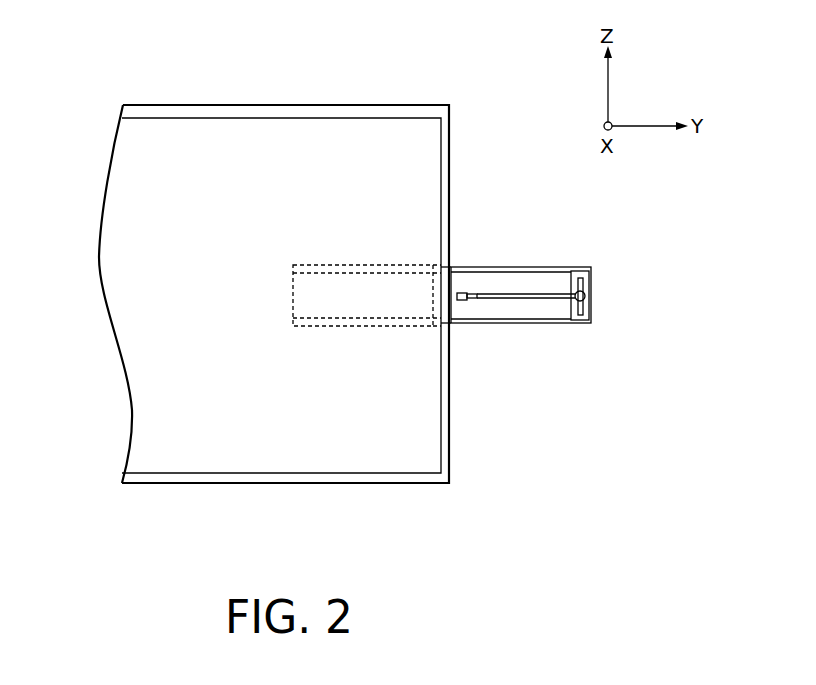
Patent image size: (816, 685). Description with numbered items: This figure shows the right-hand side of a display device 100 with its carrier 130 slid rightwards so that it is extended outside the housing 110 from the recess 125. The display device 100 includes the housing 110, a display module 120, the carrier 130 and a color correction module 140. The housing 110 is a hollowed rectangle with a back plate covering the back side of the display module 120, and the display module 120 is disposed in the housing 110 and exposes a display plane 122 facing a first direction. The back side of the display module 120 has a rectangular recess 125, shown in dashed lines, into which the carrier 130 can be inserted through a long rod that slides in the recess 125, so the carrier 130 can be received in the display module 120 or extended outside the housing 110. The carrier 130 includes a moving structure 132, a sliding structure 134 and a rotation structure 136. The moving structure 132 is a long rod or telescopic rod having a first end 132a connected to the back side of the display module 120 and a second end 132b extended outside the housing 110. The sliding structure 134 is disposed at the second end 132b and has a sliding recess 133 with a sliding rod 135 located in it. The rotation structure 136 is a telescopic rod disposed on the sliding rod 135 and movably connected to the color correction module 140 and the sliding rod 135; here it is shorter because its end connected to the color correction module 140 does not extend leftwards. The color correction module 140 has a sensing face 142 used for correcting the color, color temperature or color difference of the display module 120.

The display device 100 is at (92, 42).
The housing 110 is at (339, 105).
The display module 120 is at (234, 135).
The display plane 122 is at (253, 307).
The recess 125 is at (354, 255).
The carrier 130 is at (508, 212).
The moving structure 132 is at (527, 267).
The first end 132a is at (437, 258).
The second end 132b is at (593, 252).
The sliding recess 133 is at (585, 308).
The sliding structure 134 is at (638, 289).
The sliding rod 135 is at (585, 291).
The rotation structure 136 is at (535, 299).
The color correction module 140 is at (508, 340).
The sensing face 142 is at (466, 312).